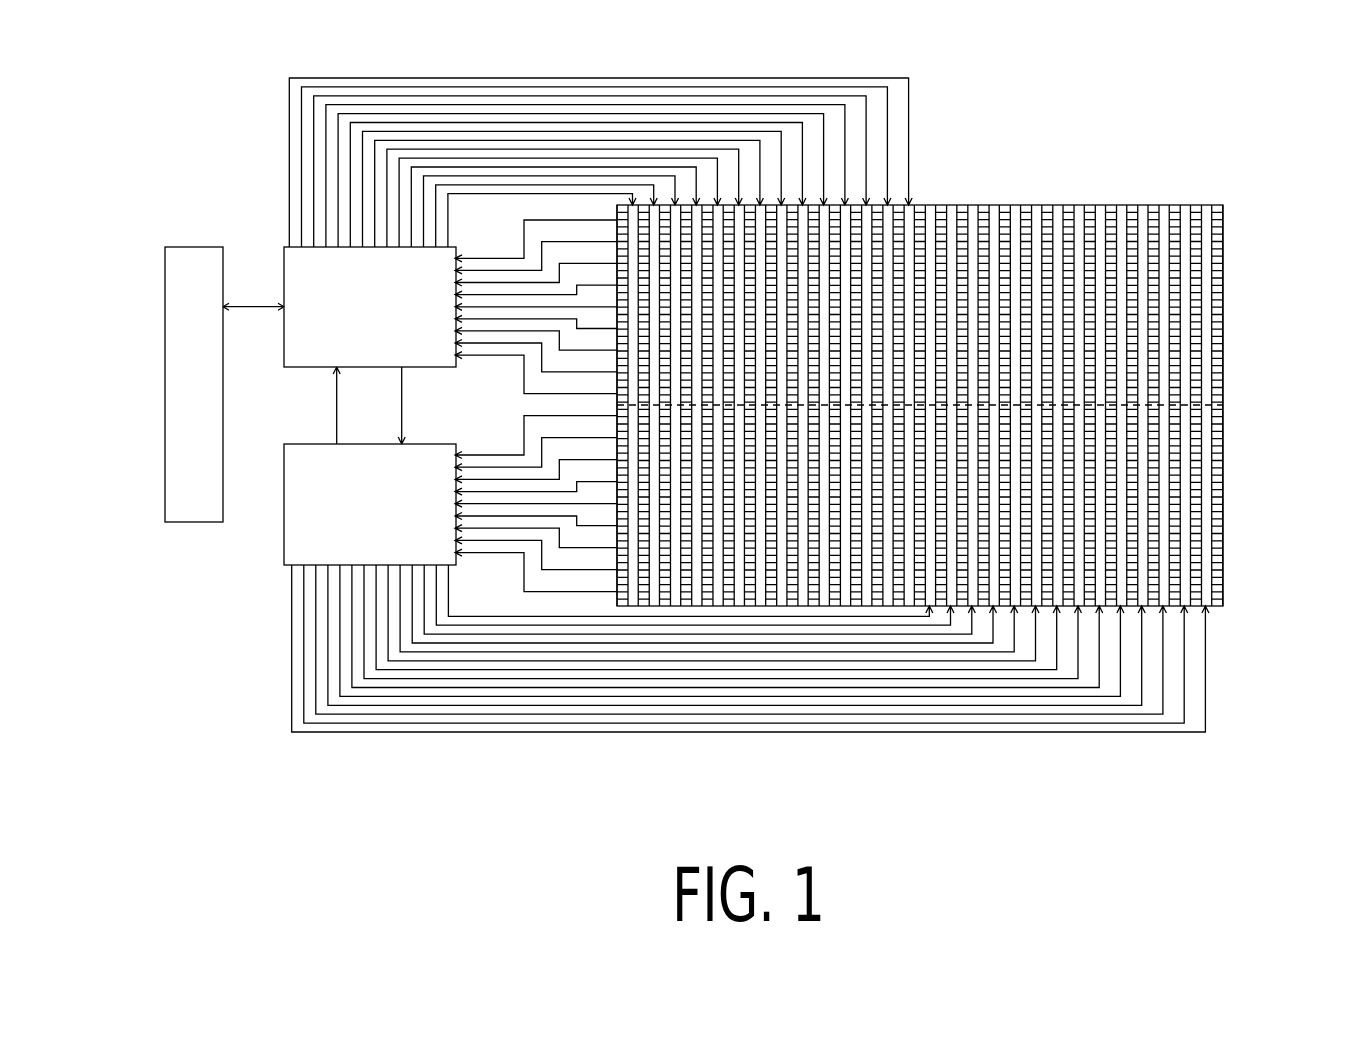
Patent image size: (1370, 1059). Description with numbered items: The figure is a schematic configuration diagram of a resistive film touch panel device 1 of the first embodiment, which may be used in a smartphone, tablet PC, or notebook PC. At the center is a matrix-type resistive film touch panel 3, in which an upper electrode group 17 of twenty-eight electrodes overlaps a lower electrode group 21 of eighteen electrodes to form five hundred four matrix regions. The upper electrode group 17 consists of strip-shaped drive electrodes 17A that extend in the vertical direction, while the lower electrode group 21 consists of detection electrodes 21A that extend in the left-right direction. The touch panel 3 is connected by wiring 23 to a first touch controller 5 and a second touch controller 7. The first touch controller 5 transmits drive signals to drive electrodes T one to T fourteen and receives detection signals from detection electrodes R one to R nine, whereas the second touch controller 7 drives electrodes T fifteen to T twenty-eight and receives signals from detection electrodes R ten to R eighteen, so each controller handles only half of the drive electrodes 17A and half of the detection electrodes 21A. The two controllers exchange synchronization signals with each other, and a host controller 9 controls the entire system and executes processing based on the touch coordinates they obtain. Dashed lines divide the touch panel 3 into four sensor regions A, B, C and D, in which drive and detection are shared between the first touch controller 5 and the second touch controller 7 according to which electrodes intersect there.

The resistive film touch panel device 1 is at (1052, 72).
The resistive film touch panel 3 is at (980, 341).
The first touch controller 5 is at (283, 268).
The second touch controller 7 is at (284, 550).
The host controller 9 is at (200, 246).
The upper electrode group 17 is at (969, 341).
The drive electrode 17A is at (1026, 118).
The lower electrode group 21 is at (1266, 378).
The detection electrode 21A is at (1222, 239).
The wiring 23 is at (654, 62).